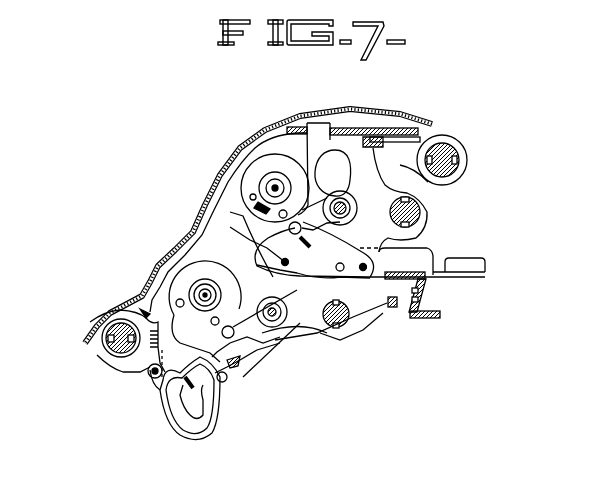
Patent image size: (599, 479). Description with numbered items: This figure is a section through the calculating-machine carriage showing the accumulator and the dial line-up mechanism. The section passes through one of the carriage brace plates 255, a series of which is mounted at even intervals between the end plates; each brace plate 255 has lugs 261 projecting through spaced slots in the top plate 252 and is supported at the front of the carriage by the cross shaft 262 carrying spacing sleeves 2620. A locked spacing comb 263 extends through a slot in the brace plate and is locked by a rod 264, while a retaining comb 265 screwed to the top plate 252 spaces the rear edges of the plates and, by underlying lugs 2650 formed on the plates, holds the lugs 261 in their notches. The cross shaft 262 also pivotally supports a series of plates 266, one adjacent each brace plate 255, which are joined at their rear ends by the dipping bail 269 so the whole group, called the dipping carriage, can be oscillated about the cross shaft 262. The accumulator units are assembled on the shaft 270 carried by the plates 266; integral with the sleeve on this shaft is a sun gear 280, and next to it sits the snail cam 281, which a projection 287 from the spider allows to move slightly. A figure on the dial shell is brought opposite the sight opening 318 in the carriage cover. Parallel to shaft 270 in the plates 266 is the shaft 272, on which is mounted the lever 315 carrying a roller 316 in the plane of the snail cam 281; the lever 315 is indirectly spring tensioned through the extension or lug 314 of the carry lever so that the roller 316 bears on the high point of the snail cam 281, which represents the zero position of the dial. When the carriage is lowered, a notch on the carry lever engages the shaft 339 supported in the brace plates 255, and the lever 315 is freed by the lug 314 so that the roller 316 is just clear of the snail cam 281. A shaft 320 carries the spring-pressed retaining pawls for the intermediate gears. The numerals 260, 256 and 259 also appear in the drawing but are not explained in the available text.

The top plate 252 is at (403, 127).
The lugs 2650 is at (365, 130).
The lugs 261 is at (318, 122).
The retaining comb 265 is at (420, 138).
The pivot shaft 260 is at (453, 173).
The shaft 339 is at (222, 178).
The pulley arm 256 is at (247, 197).
The carriage brace plate 255 is at (222, 217).
The snail cam 281 is at (193, 270).
The sun gear 280 is at (165, 245).
The sight opening 318 is at (157, 262).
The shaft 270 is at (203, 292).
The rods 264 is at (132, 300).
The spacing comb 263 is at (92, 322).
The shaft 259 is at (103, 358).
The projection 287 is at (148, 350).
The cross shaft 262 is at (150, 376).
The spacing sleeves 2620 is at (160, 368).
The lever 315 is at (193, 357).
The extension 314 is at (243, 335).
The roller 316 is at (253, 340).
The shaft 272 is at (327, 337).
The shaft 320 is at (383, 317).
The plates 266 is at (390, 317).
The dipping bail 269 is at (440, 313).